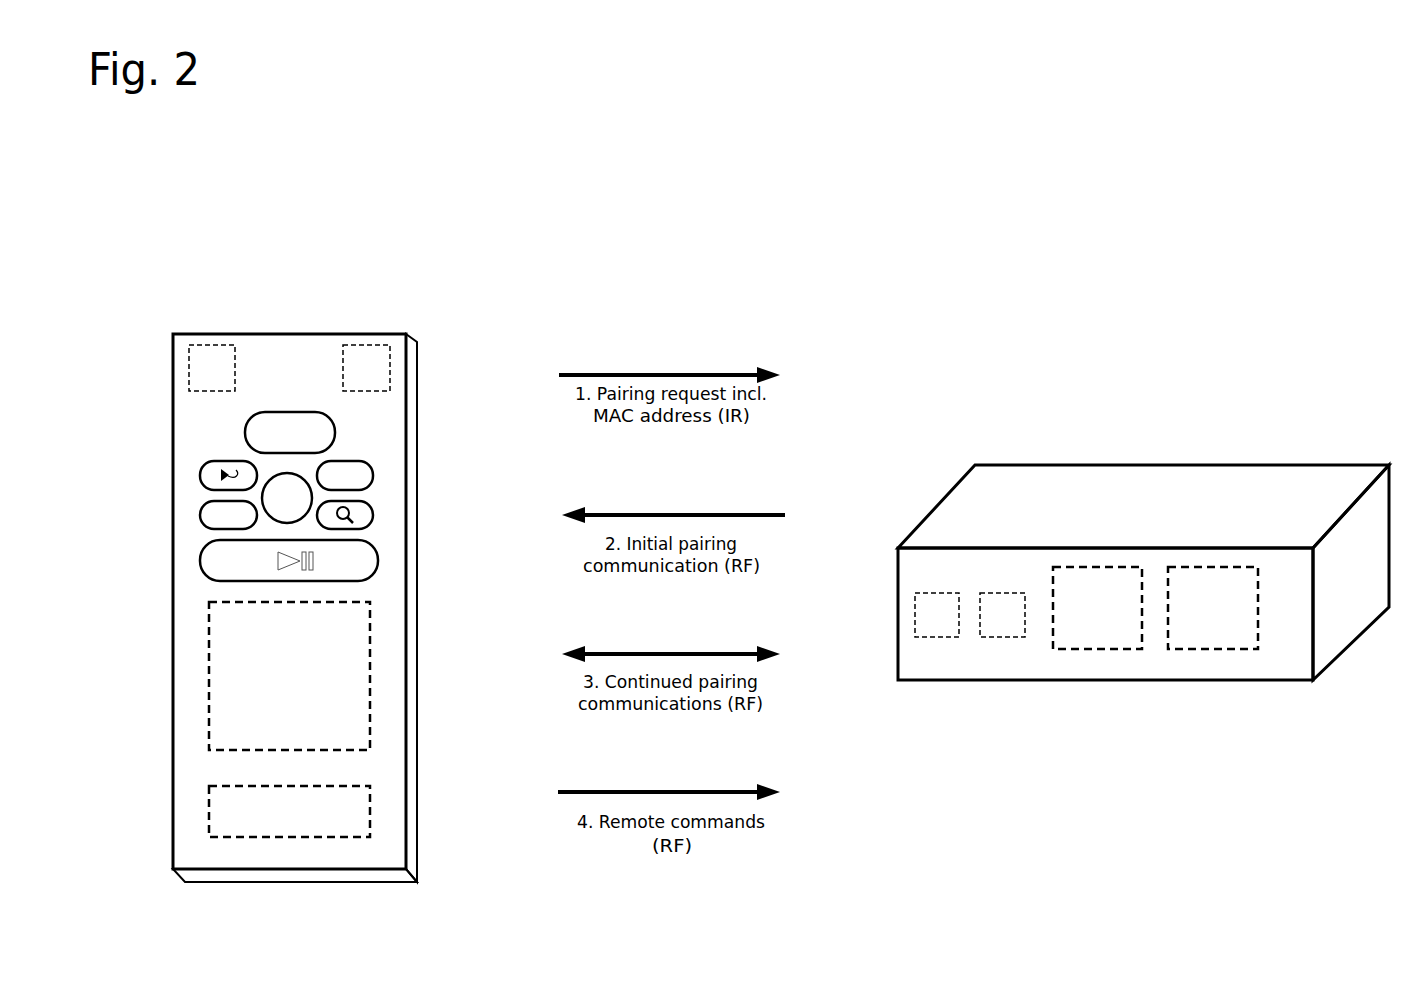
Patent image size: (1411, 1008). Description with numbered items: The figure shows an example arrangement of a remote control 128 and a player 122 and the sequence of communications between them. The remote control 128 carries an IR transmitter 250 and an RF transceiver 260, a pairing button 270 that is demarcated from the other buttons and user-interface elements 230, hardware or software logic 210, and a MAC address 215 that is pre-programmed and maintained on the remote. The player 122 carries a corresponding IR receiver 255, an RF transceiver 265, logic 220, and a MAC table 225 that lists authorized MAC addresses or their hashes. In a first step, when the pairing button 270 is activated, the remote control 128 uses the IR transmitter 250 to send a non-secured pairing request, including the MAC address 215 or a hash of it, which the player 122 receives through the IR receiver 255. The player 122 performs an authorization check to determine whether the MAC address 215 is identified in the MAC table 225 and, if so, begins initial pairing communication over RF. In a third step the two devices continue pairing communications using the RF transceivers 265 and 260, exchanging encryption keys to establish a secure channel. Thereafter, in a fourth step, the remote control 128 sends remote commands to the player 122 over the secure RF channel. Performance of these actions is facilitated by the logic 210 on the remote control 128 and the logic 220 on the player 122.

The remote control 128 is at (417, 350).
The IR transmitter 250 is at (200, 352).
The RF transceiver 260 is at (362, 362).
The pairing button 270 is at (320, 432).
The buttons and user-interface elements 230 is at (403, 508).
The logic 210 is at (348, 623).
The MAC address 215 is at (340, 797).
The player 122 is at (897, 553).
The IR receiver 255 is at (930, 622).
The RF transceiver 265 is at (997, 597).
The logic 220 is at (1068, 637).
The MAC table 225 is at (1208, 638).